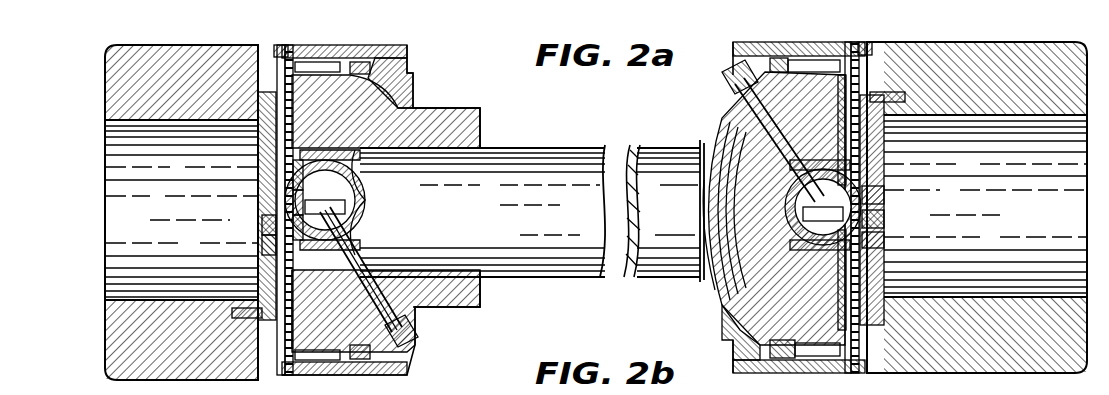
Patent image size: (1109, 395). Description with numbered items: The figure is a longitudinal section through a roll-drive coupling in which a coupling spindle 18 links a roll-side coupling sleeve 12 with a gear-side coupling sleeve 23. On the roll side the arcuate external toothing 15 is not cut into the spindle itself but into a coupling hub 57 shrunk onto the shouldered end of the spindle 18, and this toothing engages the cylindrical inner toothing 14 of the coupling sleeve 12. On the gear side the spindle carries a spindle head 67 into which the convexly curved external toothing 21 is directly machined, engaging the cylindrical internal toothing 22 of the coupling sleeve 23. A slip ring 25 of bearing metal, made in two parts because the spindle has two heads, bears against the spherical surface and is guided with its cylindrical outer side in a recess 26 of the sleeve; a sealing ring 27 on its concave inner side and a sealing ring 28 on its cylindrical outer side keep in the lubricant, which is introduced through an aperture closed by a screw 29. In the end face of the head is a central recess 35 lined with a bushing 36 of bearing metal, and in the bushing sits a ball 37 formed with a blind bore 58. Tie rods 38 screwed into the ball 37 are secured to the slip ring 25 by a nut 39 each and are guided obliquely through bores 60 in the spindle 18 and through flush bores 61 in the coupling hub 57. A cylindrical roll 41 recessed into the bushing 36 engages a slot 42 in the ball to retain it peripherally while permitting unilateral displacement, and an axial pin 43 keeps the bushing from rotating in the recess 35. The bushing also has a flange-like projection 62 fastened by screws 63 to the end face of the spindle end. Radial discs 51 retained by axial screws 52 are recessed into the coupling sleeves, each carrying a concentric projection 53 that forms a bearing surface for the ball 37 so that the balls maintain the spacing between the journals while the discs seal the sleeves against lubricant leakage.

The coupling sleeve 12 is at (165, 372).
The cylindrical inner toothing 14 is at (305, 45).
The convexly curved external toothing 15 is at (340, 58).
The coupling spindle 18 is at (642, 144).
The convexly curved external toothing 21 is at (810, 366).
The cylindrical internal toothing 22 is at (852, 366).
The coupling sleeve 23 is at (1003, 365).
The slip ring 25 is at (413, 75).
The recess 26 is at (374, 365).
The sealing ring 27 is at (425, 106).
The sealing ring 28 is at (390, 45).
The screw 29 is at (278, 45).
The recess 35 is at (362, 150).
The bushing 36 is at (360, 190).
The ball 37 is at (290, 230).
The tie rods 38 is at (365, 305).
The nut 39 is at (418, 336).
The cylindrical roll 41 is at (276, 186).
The slot 42 is at (276, 200).
The axial pin 43 is at (276, 172).
The radial disc 51 is at (258, 100).
The axial screws 52 is at (266, 370).
The concentric projection 53 is at (262, 224).
The coupling hub 57 is at (465, 304).
The blind bore 58 is at (350, 210).
The bores 60 is at (355, 222).
The bores 61 is at (383, 312).
The flange-like projection 62 is at (386, 213).
The screws 63 is at (310, 272).
The spindle head 67 is at (804, 60).